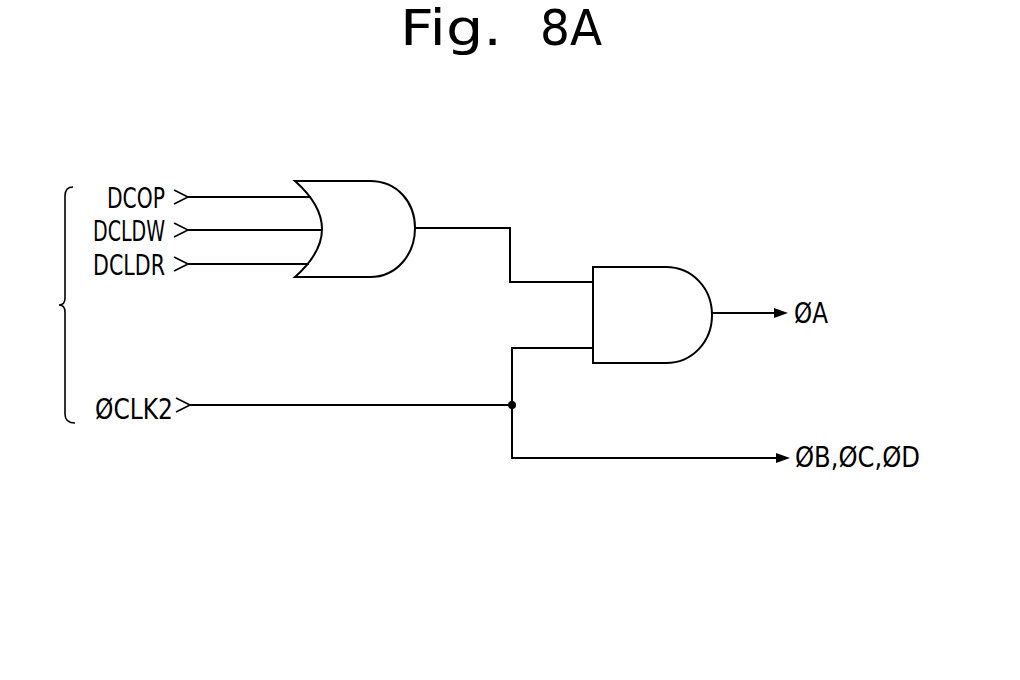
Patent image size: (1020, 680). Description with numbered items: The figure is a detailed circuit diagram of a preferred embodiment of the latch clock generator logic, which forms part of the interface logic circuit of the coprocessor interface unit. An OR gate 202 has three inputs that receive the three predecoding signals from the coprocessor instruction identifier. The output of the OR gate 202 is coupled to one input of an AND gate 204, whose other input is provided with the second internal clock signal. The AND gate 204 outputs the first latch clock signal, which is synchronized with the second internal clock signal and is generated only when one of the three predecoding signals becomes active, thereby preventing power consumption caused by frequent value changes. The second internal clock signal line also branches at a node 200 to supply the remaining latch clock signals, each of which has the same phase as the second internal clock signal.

The OR gate 202 is at (363, 180).
The AND gate 204 is at (662, 266).
The clock signal øCLK2 distribution node (unlabeled in this figure) 200 is at (490, 405).